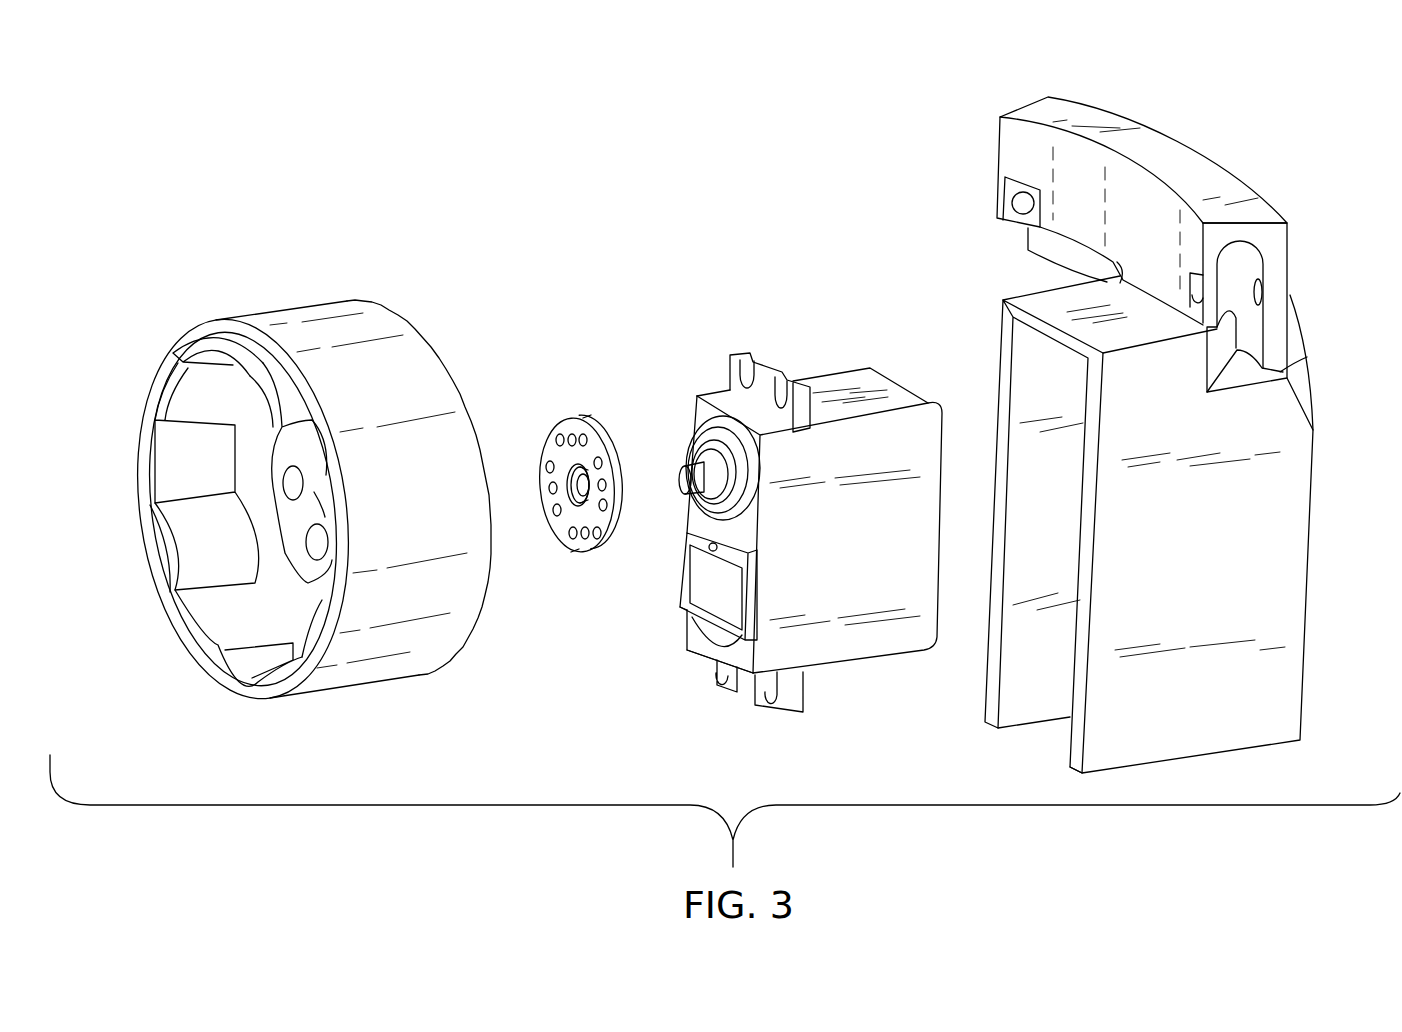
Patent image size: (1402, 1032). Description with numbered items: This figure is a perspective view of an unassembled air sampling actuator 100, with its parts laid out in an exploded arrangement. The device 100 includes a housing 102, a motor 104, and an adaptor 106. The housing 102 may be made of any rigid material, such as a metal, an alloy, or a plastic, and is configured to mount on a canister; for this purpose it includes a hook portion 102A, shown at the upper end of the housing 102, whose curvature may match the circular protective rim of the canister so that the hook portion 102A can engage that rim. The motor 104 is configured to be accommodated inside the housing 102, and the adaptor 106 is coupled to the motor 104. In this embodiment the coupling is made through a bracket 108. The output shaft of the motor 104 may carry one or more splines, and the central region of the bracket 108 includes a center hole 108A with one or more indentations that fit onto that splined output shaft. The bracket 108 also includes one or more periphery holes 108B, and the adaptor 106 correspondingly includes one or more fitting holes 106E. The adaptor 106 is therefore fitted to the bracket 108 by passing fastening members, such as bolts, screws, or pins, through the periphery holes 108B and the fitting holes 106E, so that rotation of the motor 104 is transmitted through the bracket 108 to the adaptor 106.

The air sampling actuator 100 is at (1230, 86).
The housing 102 is at (996, 143).
The hook portion 102A is at (1290, 255).
The motor 104 is at (837, 355).
The adaptor 106 is at (283, 464).
The fitting holes 106E is at (316, 545).
The bracket 108 is at (564, 481).
The center hole 108A is at (570, 470).
The periphery holes 108B is at (572, 540).